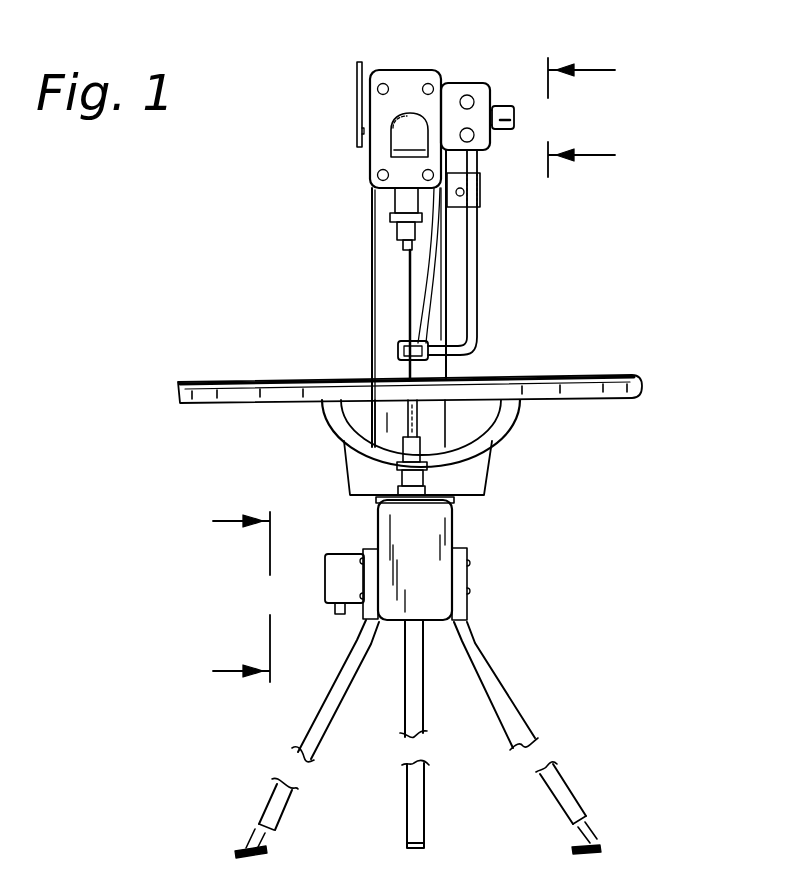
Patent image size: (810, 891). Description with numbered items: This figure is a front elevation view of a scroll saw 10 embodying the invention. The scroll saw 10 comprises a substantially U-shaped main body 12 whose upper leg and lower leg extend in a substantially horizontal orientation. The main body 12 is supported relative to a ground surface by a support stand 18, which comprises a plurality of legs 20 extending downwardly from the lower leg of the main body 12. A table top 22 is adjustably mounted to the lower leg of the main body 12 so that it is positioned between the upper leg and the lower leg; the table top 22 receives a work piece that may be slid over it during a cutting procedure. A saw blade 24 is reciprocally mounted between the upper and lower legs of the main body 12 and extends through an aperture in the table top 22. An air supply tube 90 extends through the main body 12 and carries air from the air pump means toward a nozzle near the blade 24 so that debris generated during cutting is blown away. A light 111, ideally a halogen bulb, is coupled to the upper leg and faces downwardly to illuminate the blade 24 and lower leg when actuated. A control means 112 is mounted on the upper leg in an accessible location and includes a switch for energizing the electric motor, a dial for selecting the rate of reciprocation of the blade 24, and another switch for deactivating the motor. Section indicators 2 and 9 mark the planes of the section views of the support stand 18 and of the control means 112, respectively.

The scroll saw 10 is at (578, 265).
The main body 12 is at (427, 70).
The support stand 18 is at (472, 571).
The legs 20 is at (303, 743).
The table top 22 is at (177, 388).
The saw blade 24 is at (407, 282).
The air supply tube 90 is at (437, 278).
The light 111 is at (415, 120).
The control means 112 is at (517, 122).
The section line 2- 2 is at (232, 598).
The section line 9- 9 is at (596, 117).